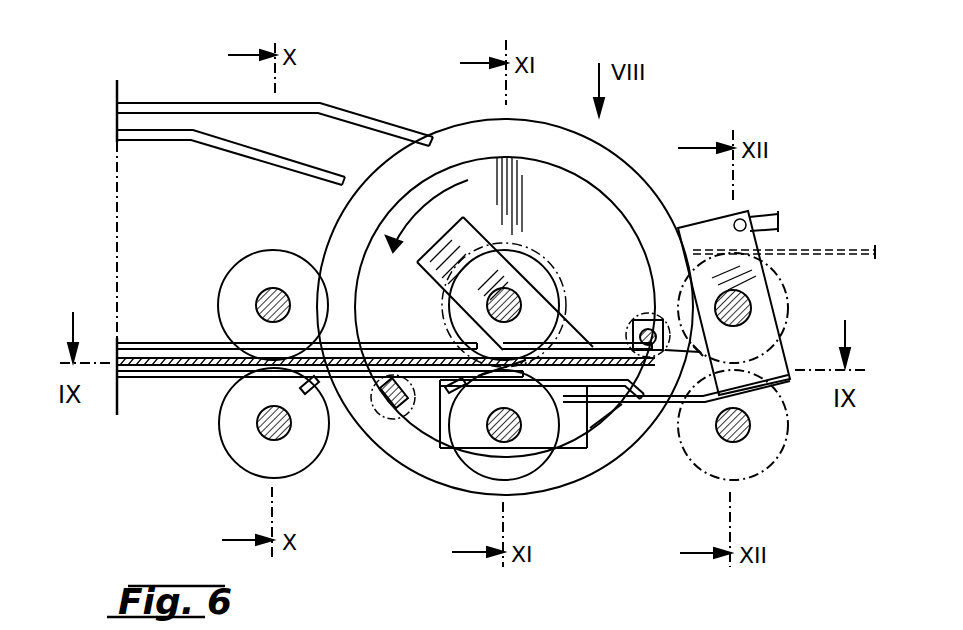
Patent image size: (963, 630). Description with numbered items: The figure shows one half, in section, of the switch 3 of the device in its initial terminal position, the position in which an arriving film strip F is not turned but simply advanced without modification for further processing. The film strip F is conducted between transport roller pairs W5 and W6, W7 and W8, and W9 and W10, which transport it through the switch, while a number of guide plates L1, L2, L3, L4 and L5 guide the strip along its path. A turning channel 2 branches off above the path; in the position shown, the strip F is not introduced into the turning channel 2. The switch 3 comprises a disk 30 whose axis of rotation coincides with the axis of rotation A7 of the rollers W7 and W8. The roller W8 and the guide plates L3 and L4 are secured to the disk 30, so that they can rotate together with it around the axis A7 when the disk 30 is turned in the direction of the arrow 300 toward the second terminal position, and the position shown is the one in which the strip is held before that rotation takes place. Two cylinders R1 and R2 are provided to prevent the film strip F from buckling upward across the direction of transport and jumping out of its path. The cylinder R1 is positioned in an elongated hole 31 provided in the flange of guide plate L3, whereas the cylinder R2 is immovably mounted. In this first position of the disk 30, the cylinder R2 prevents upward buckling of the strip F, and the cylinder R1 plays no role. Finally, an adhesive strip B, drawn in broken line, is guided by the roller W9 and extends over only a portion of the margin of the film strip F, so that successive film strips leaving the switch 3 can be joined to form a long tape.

The turning channel 2 is at (148, 113).
The switch 3 is at (750, 78).
The disk 30 is at (468, 130).
The arrow indicating direction of rotation of the disk 300 is at (430, 203).
The elongated hole 31 is at (378, 415).
The transport roller W5 is at (258, 252).
The transport roller W6 is at (228, 458).
The transport roller W7 is at (548, 263).
The transport roller W8 is at (535, 470).
The transport roller W9 is at (790, 298).
The transport roller W10 is at (786, 460).
The cylinder R1 is at (390, 430).
The cylinder R2 is at (650, 313).
The axis of rotation A7 is at (551, 289).
The guide plate L1 is at (188, 343).
The guide plate L2 is at (172, 378).
The guide plate L3 is at (440, 449).
The guide plate L4 is at (604, 343).
The guide plate L5 is at (637, 405).
The film strip F is at (165, 358).
The adhesive strip B is at (833, 248).